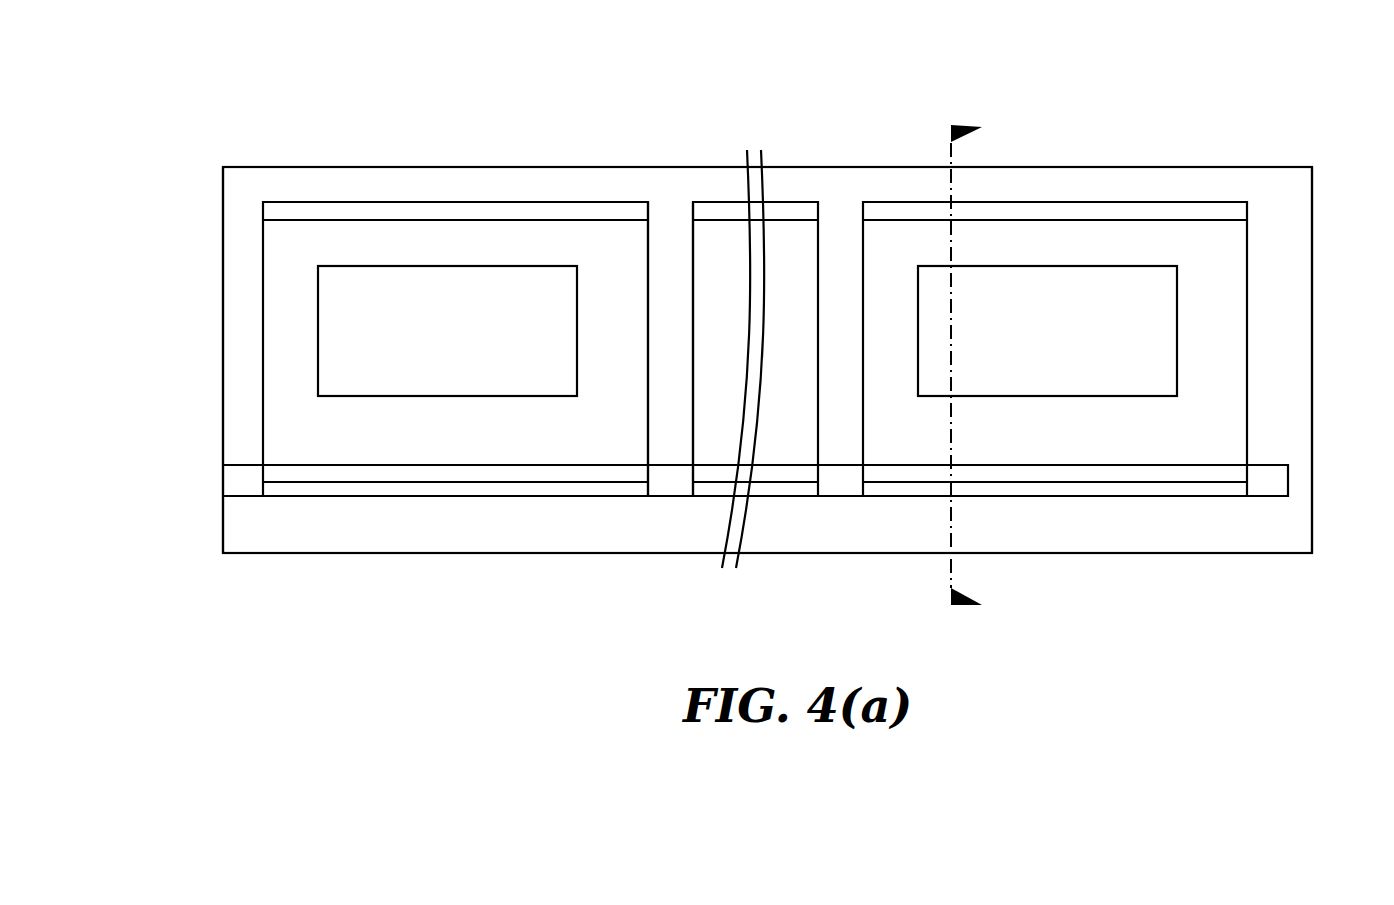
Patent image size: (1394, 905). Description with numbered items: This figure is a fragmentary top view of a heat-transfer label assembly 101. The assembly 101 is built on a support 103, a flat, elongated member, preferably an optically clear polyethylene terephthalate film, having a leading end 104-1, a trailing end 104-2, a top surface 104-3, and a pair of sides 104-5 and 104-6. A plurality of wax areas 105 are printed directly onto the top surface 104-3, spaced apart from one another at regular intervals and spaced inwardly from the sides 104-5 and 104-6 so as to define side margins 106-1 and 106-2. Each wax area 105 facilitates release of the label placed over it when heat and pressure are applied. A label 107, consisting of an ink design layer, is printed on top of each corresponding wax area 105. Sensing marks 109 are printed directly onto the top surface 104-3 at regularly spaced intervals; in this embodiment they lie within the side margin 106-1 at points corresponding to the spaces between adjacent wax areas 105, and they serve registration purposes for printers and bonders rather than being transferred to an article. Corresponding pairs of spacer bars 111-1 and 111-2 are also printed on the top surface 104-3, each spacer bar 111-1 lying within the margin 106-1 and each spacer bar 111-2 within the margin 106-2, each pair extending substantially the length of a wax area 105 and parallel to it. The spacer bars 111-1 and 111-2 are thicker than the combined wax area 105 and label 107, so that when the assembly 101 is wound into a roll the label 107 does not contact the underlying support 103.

The heat-transfer label assembly 101 is at (230, 88).
The support 103 is at (1210, 168).
The leading end 104-1 is at (1312, 332).
The trailing end 104-2 is at (223, 350).
The top surface 104-3 is at (673, 235).
The side 104-5 is at (465, 553).
The side 104-6 is at (393, 165).
The wax area 105 is at (860, 290).
The side margin 106-1 is at (1010, 528).
The side margin 106-2 is at (545, 185).
The label 107 is at (432, 400).
The sensing mark 109 is at (245, 480).
The spacer bar 111-1 is at (502, 488).
The spacer bar 111-2 is at (310, 212).